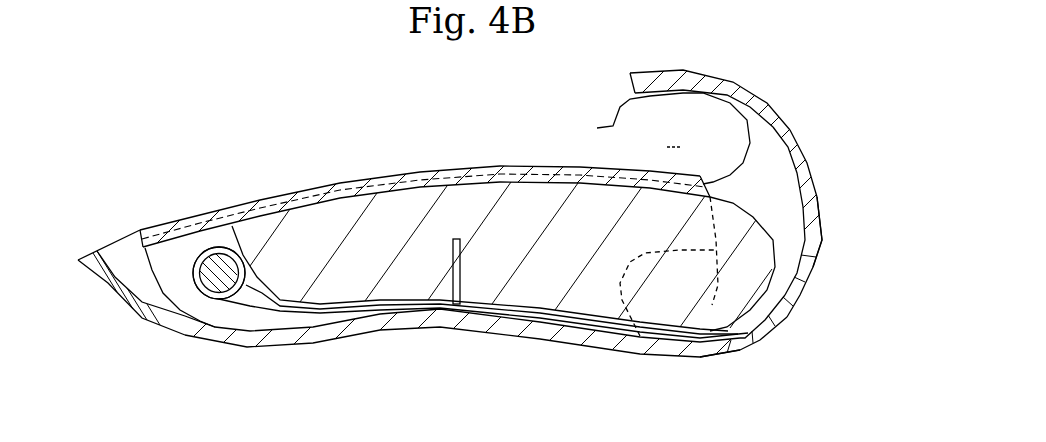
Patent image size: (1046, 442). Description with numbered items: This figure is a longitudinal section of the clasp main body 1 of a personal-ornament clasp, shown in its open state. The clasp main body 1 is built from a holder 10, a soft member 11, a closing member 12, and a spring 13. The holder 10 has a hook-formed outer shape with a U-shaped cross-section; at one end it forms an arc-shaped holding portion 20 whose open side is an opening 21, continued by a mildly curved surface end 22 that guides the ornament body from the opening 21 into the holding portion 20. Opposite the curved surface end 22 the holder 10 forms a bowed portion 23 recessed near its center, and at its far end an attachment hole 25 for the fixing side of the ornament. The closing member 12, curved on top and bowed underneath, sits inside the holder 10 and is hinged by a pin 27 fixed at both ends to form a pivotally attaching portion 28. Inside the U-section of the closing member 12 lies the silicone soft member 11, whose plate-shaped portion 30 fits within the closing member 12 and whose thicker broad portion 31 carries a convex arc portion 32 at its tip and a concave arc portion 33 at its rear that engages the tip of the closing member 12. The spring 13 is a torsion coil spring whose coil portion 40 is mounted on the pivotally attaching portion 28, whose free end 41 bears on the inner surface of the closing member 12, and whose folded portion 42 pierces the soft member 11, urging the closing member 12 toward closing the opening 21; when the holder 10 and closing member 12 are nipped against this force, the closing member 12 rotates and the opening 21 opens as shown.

The clasp main body 1 is at (812, 250).
The holder 10 is at (765, 182).
The soft member 11 is at (740, 273).
The closing member 12 is at (337, 185).
The spring 13 is at (198, 252).
The holding portion 20 is at (737, 121).
The opening 21 is at (658, 138).
The curved surface end 22 is at (457, 175).
The bowed portion 23 is at (412, 335).
The attachment hole 25 is at (122, 300).
The pin 27 is at (218, 299).
The pivotally attaching portion 28 is at (185, 224).
The plate-shaped portion 30 is at (553, 240).
The broad portion 31 is at (727, 349).
The convex arc portion 32 is at (820, 219).
The concave arc portion 33 is at (640, 336).
The coil portion 40 is at (219, 247).
The free end 41 is at (440, 310).
The folded portion 42 is at (462, 246).